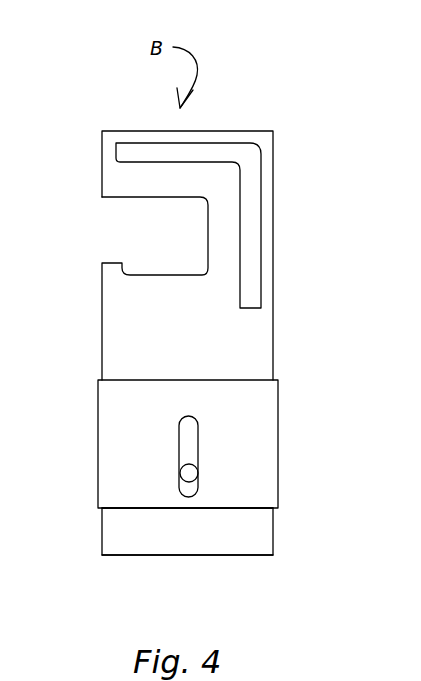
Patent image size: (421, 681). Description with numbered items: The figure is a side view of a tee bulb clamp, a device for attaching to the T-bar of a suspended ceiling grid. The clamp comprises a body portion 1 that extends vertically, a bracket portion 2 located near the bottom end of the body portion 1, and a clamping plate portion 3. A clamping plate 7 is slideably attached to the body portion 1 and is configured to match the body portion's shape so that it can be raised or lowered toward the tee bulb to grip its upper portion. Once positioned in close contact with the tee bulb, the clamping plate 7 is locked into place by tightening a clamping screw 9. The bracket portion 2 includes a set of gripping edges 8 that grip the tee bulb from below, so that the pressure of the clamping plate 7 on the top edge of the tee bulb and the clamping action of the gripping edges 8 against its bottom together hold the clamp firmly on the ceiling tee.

The body portion 1 is at (273, 173).
The clamping plate 7 is at (248, 415).
The clamping screw 9 is at (183, 462).
The bracket portion 2 is at (273, 550).
The clamping plate portion 3 is at (275, 517).
The gripping edges 8 is at (242, 555).